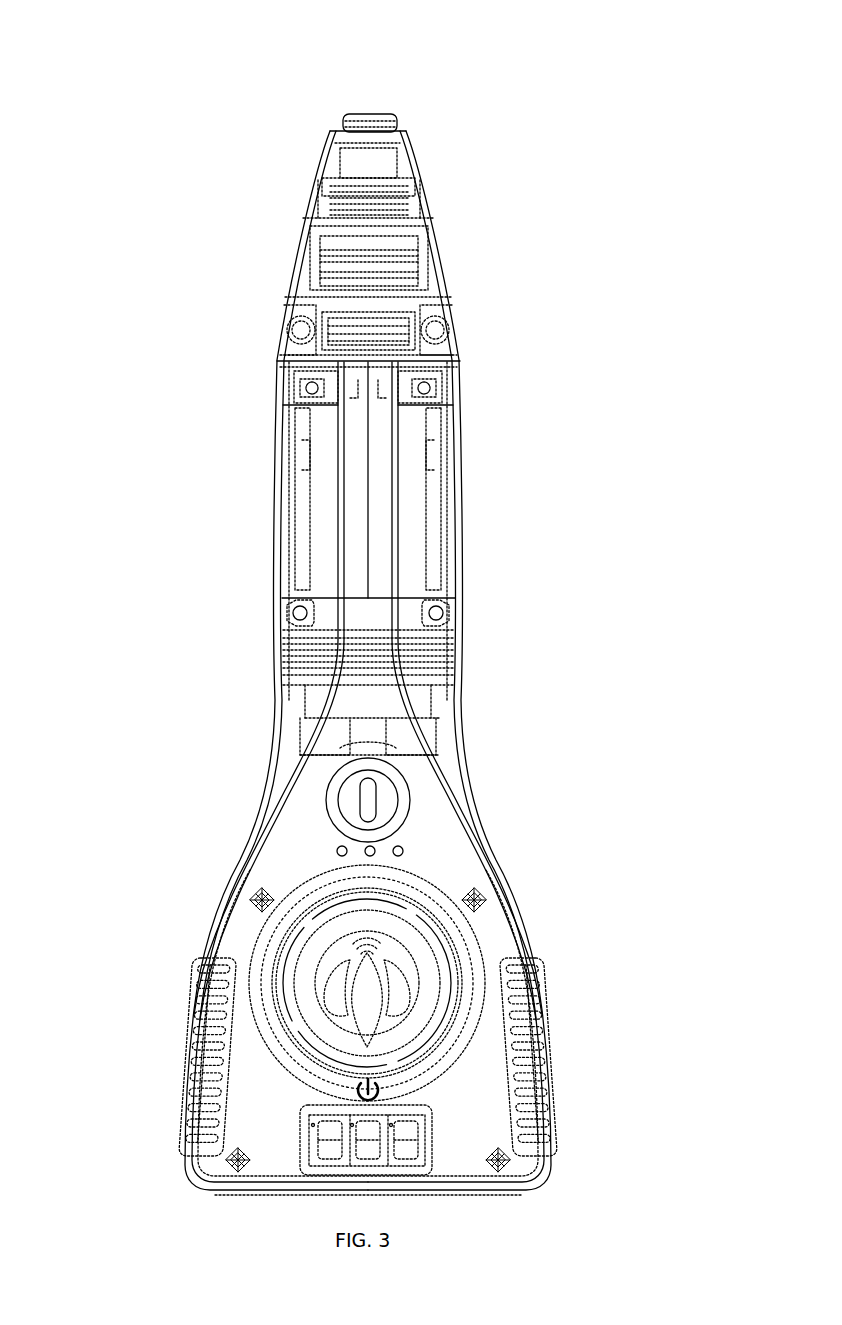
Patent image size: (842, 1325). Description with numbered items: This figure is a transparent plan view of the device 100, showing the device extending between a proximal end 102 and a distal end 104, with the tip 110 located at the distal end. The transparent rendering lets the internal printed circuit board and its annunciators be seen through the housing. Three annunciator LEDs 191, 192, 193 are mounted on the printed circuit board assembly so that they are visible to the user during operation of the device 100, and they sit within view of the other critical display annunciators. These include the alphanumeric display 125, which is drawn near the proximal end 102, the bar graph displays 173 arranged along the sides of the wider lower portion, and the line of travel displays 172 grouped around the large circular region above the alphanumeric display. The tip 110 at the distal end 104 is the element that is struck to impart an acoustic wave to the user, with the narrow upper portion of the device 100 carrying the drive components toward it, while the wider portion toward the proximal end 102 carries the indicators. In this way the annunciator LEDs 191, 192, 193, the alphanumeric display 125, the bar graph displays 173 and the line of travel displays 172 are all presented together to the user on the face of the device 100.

The device 100 is at (520, 298).
The proximal end 102 is at (153, 1190).
The distal end 104 is at (368, 597).
The tip 110 is at (343, 116).
The alphanumeric display 125 is at (420, 1155).
The line of travel displays 172 is at (440, 1040).
The bar graph displays 173 is at (195, 1040).
The annunciator LED 191 is at (337, 851).
The annunciator LED 192 is at (367, 856).
The annunciator LED 193 is at (403, 853).